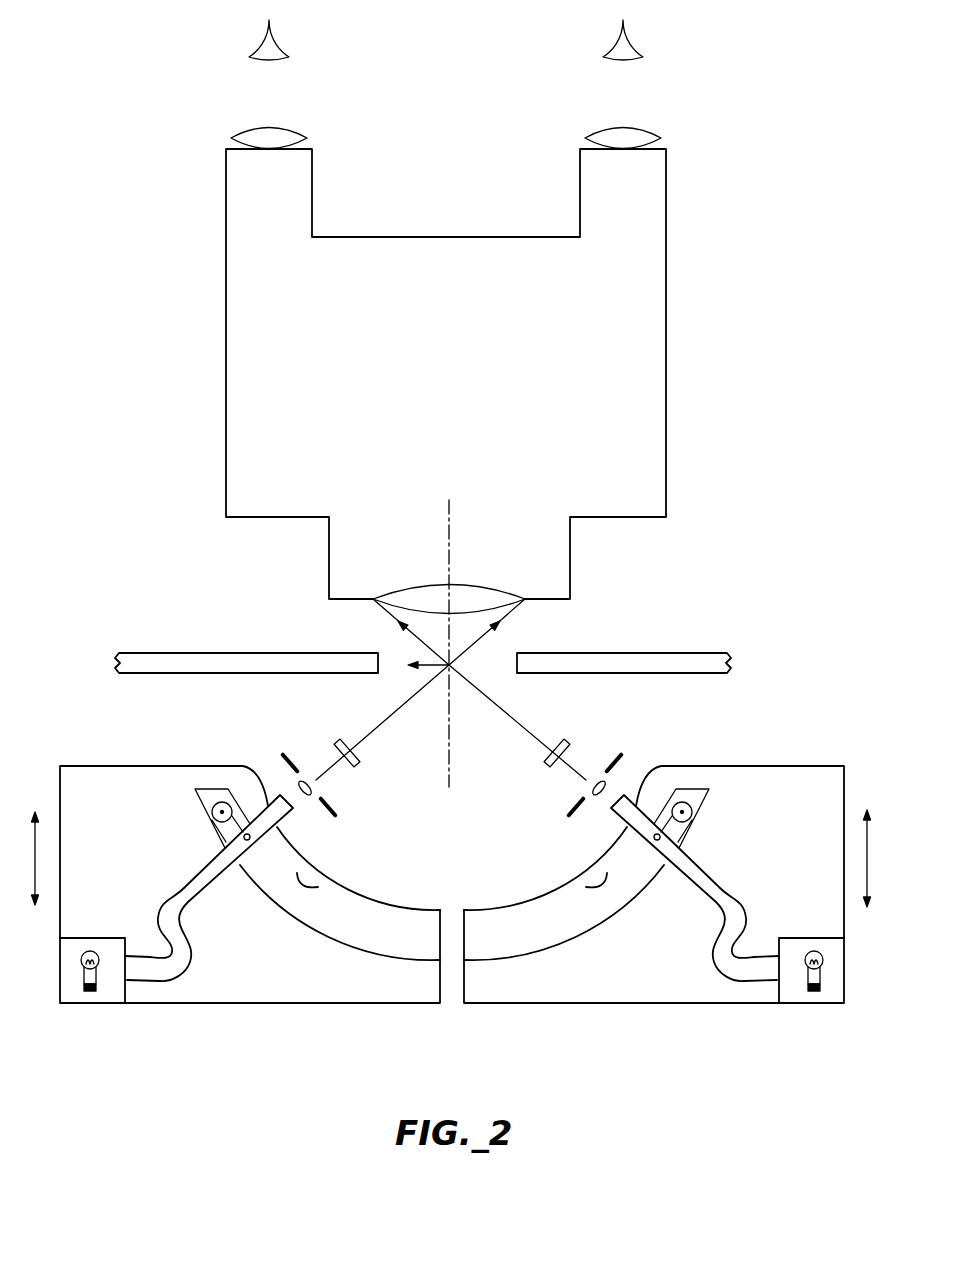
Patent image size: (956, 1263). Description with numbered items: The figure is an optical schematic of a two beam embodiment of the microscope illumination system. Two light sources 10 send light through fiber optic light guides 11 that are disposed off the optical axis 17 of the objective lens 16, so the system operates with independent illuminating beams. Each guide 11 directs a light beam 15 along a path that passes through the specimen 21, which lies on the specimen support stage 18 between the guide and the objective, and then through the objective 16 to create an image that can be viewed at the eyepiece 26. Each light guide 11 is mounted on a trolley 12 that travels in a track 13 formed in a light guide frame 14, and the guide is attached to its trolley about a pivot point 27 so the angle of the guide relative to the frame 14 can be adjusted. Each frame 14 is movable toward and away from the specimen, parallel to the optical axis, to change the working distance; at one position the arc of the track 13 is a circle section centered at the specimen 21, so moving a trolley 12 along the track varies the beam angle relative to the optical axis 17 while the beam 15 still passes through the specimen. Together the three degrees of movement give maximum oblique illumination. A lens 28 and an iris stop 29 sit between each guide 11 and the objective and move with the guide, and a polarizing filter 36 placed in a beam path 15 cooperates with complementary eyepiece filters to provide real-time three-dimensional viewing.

The light beam source 10 is at (83, 938).
The fiber optic light beam guide 11 is at (195, 946).
The trolley 12 is at (211, 810).
The track 13 is at (317, 887).
The light guide frame 14 is at (123, 770).
The light beam 15 is at (377, 735).
The objective lens means 16 is at (437, 555).
The optical axis 17 is at (449, 513).
The specimen support stage 18 is at (150, 653).
The specimen 21 is at (482, 667).
The eyepiece 26 is at (469, 236).
The pivot point 27 is at (243, 838).
The lens 28 is at (295, 782).
The iris stop 29 is at (284, 753).
The polarizing filter 36 is at (361, 766).